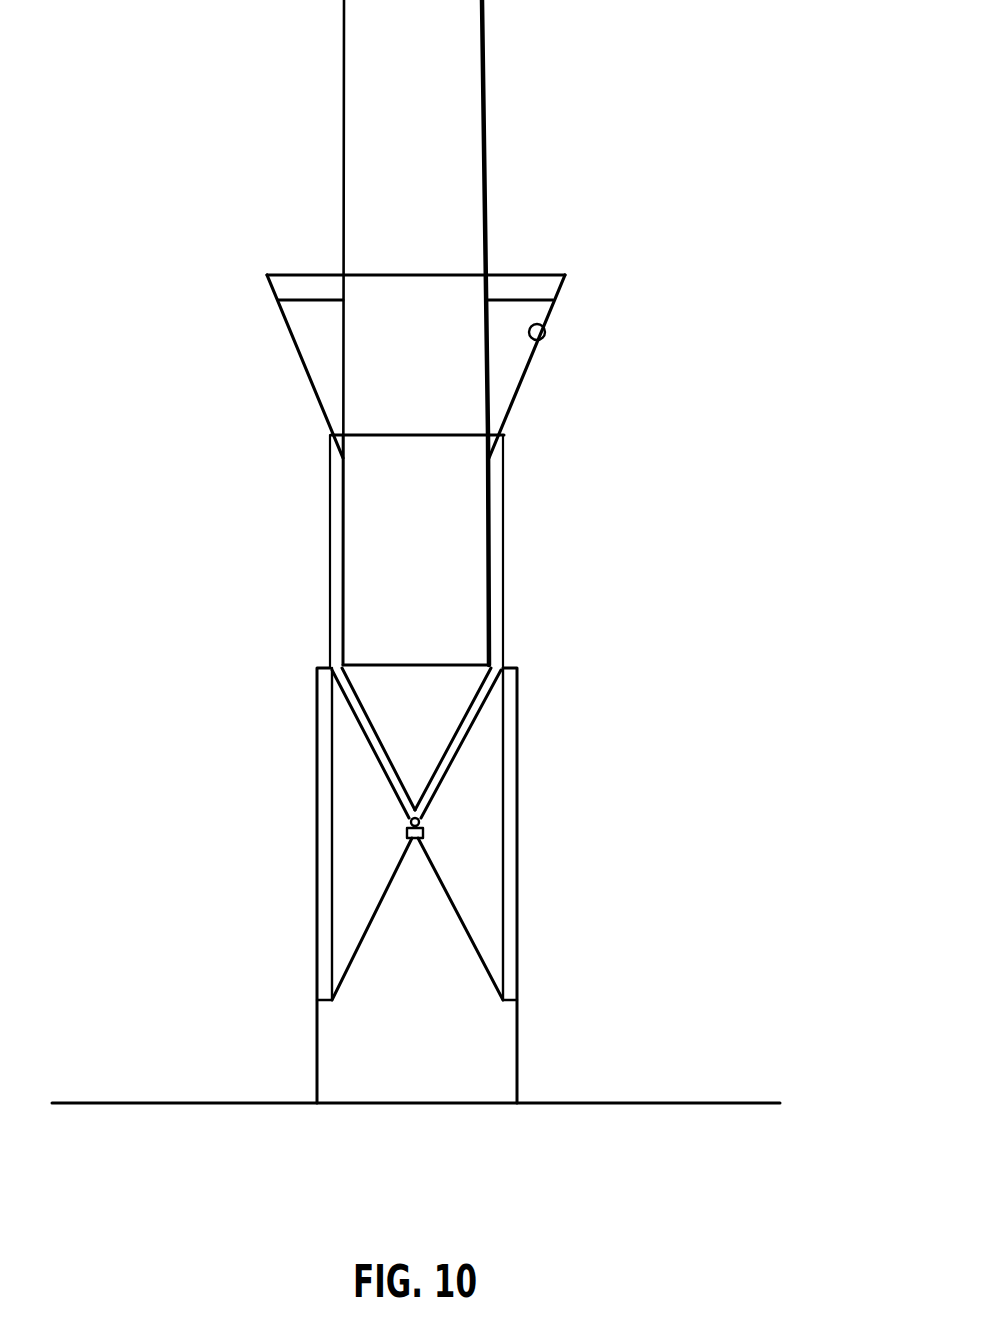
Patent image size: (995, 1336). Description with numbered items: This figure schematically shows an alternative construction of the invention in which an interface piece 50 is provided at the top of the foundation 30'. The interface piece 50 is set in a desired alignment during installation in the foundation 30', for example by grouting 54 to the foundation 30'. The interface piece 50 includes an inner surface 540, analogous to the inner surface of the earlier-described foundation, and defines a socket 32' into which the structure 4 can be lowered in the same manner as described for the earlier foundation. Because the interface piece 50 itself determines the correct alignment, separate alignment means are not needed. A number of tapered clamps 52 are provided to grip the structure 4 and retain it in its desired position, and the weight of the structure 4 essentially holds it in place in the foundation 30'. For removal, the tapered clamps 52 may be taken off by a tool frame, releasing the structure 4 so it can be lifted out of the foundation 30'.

The structure 4 is at (462, 141).
The tapered clamps 52 is at (322, 324).
The inner surface 540 is at (548, 326).
The interface piece 50 is at (316, 418).
The socket 32' is at (466, 550).
The grouting 54 is at (513, 743).
The foundation 30' is at (457, 885).